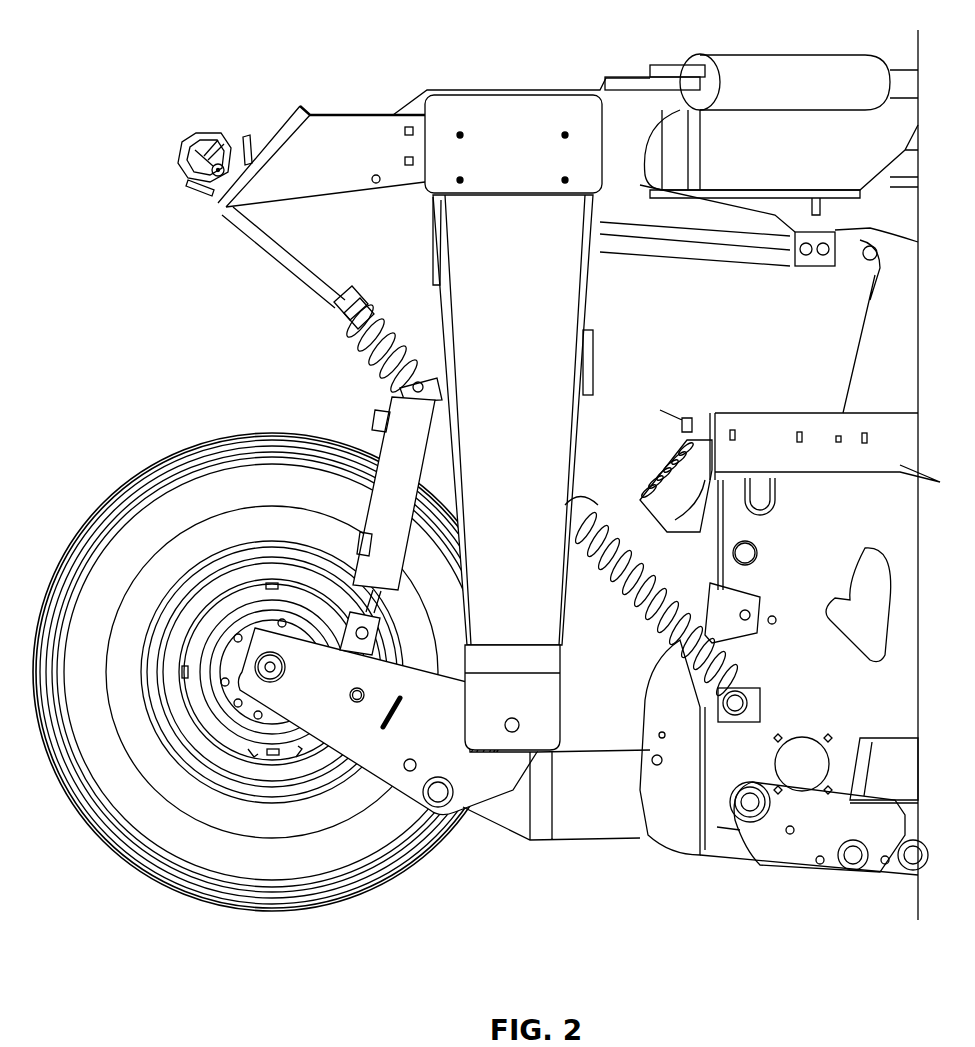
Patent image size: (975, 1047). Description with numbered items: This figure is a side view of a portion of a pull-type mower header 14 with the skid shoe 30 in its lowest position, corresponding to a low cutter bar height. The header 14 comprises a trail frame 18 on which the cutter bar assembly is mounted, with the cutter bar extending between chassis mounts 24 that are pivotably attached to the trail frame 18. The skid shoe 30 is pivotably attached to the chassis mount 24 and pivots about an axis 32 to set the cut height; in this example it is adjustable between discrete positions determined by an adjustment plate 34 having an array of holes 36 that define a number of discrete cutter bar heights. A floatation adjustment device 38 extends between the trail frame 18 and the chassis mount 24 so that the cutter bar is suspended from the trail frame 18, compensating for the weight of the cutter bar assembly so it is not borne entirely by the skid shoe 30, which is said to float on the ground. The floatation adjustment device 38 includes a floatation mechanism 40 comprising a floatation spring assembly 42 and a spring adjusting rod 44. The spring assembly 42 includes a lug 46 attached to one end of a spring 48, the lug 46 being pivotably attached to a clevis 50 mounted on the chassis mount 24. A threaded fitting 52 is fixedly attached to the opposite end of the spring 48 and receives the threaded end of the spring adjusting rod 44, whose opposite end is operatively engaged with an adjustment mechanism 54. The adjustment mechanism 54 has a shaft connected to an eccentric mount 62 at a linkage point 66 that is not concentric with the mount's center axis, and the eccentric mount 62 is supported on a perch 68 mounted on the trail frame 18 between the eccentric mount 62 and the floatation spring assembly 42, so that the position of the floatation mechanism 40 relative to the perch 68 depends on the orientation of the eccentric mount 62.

The header 14 is at (165, 364).
The trail frame 18 is at (505, 108).
The chassis mount 24 is at (880, 682).
The skid shoe 30 is at (675, 848).
The axis 32 is at (910, 880).
The adjustment plate 34 is at (680, 715).
The holes 36 is at (650, 752).
The floatation adjustment device 38 is at (350, 377).
The floatation mechanism 40 is at (650, 565).
The floatation spring assembly 42 is at (585, 507).
The spring adjusting rod 44 is at (276, 250).
The lug 46 is at (772, 642).
The spring 48 is at (610, 613).
The clevis 50 is at (765, 697).
The threaded fitting 52 is at (372, 292).
The adjustment mechanism 54 is at (122, 160).
The eccentric mount 62 is at (214, 137).
The linkage point 66 is at (190, 190).
The perch 68 is at (328, 130).